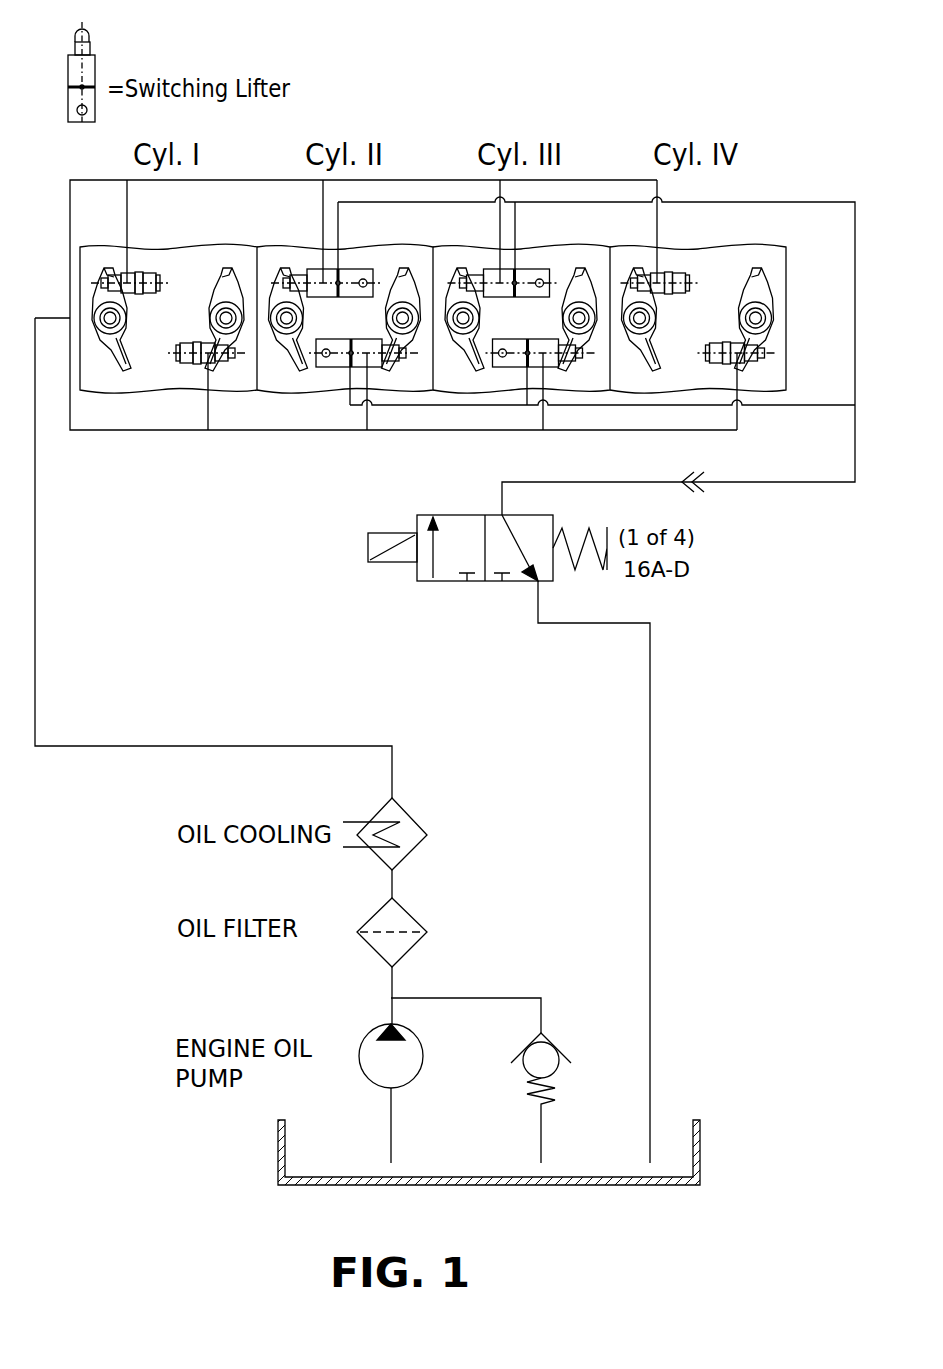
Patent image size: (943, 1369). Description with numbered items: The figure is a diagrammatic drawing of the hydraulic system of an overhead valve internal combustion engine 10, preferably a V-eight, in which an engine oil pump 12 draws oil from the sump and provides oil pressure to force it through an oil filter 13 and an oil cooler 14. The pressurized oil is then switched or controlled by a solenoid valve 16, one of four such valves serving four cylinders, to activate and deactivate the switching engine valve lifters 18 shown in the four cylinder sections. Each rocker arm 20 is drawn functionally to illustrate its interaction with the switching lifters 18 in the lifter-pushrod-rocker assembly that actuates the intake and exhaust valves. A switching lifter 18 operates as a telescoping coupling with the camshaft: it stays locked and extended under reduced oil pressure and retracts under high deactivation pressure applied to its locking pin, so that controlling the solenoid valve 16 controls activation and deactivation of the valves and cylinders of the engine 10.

The overhead valve internal combustion engine 10 is at (710, 108).
The engine oil pump 12 is at (420, 1075).
The oil filter 13 is at (410, 912).
The oil cooler 14 is at (405, 812).
The solenoid valve 16 is at (485, 582).
The switching engine valve lifter 18 is at (90, 72).
The rocker arm 20 is at (568, 327).